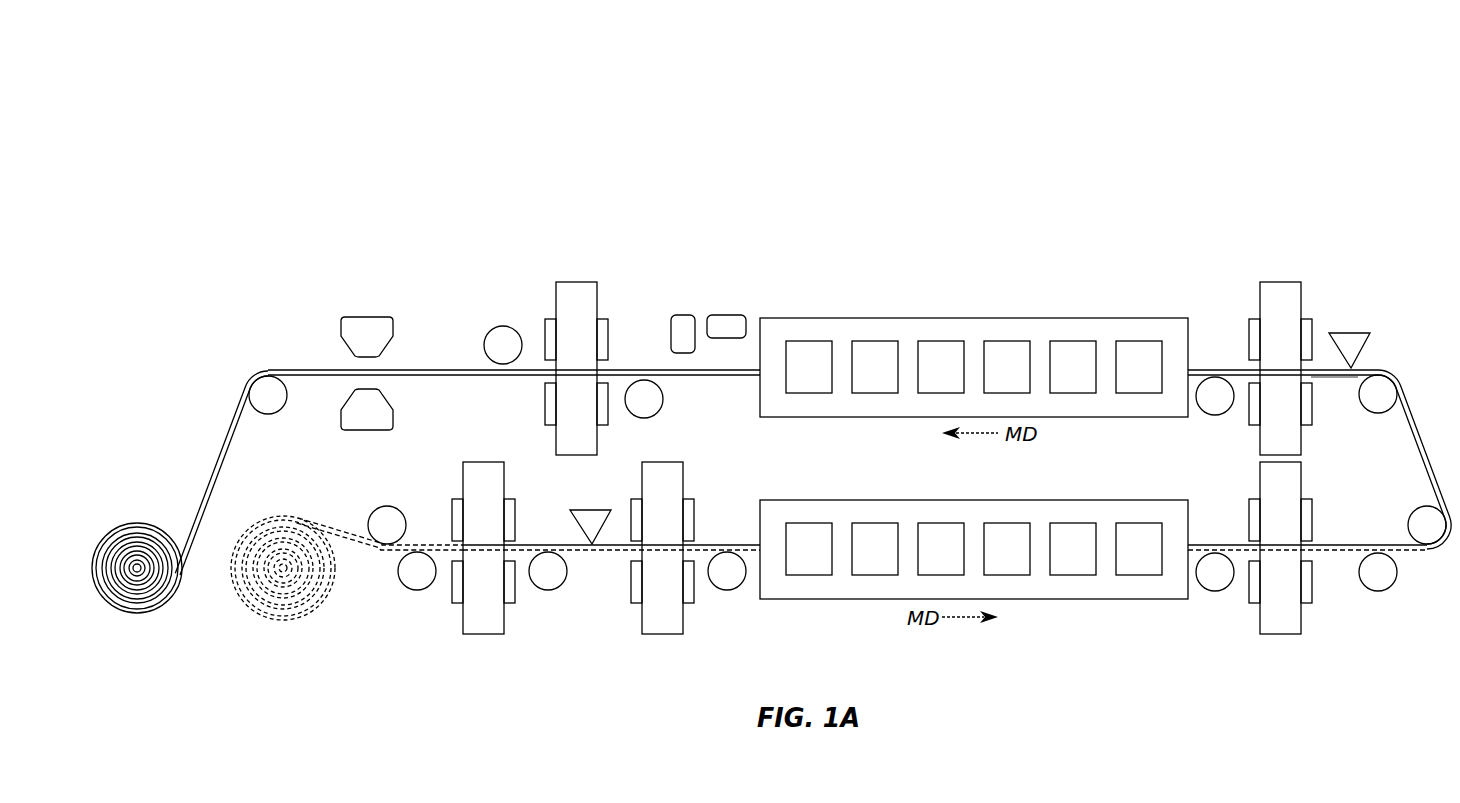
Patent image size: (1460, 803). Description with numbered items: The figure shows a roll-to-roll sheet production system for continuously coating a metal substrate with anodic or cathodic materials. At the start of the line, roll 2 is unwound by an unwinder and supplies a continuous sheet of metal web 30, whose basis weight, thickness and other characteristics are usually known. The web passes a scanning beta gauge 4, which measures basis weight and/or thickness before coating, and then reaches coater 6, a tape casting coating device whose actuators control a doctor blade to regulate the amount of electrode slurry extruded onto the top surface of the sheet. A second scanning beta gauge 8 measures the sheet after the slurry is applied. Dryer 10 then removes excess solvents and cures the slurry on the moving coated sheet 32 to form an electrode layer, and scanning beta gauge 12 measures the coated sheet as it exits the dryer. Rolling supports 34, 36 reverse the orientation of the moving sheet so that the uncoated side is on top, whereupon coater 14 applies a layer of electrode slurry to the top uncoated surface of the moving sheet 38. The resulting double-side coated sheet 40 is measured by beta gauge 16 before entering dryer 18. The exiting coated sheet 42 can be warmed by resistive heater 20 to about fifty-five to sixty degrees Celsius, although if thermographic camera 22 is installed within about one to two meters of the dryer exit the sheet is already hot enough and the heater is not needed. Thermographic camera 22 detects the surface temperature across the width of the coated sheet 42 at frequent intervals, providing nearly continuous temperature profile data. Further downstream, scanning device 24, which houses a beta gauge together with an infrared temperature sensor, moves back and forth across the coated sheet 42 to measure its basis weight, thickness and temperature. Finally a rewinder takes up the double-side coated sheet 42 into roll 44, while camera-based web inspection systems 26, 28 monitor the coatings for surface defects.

The roll 2 is at (255, 660).
The scanning beta gauge 4 is at (482, 636).
The coater 6 is at (586, 510).
The scanning beta gauge 8 is at (665, 636).
The dryer 10 is at (831, 600).
The scanning beta gauge 12 is at (1260, 614).
The coater 14 is at (1353, 331).
The beta gauge 16 is at (1272, 281).
The dryer 18 is at (891, 317).
The resistive heater 20 is at (739, 313).
The thermographic camera 22 is at (688, 313).
The scanning device 24 is at (585, 281).
The camera-based web inspection system 26 is at (383, 314).
The camera-based web inspection system 28 is at (376, 431).
The sheet of metal web 30 is at (342, 539).
The moving coated sheet 32 is at (750, 544).
The rolling support 34 is at (1418, 508).
The rolling support 36 is at (1377, 414).
The moving sheet 38 is at (1384, 372).
The double-side coated sheet 40 is at (1311, 378).
The coated sheet 42 is at (733, 376).
The roll 44 is at (122, 490).